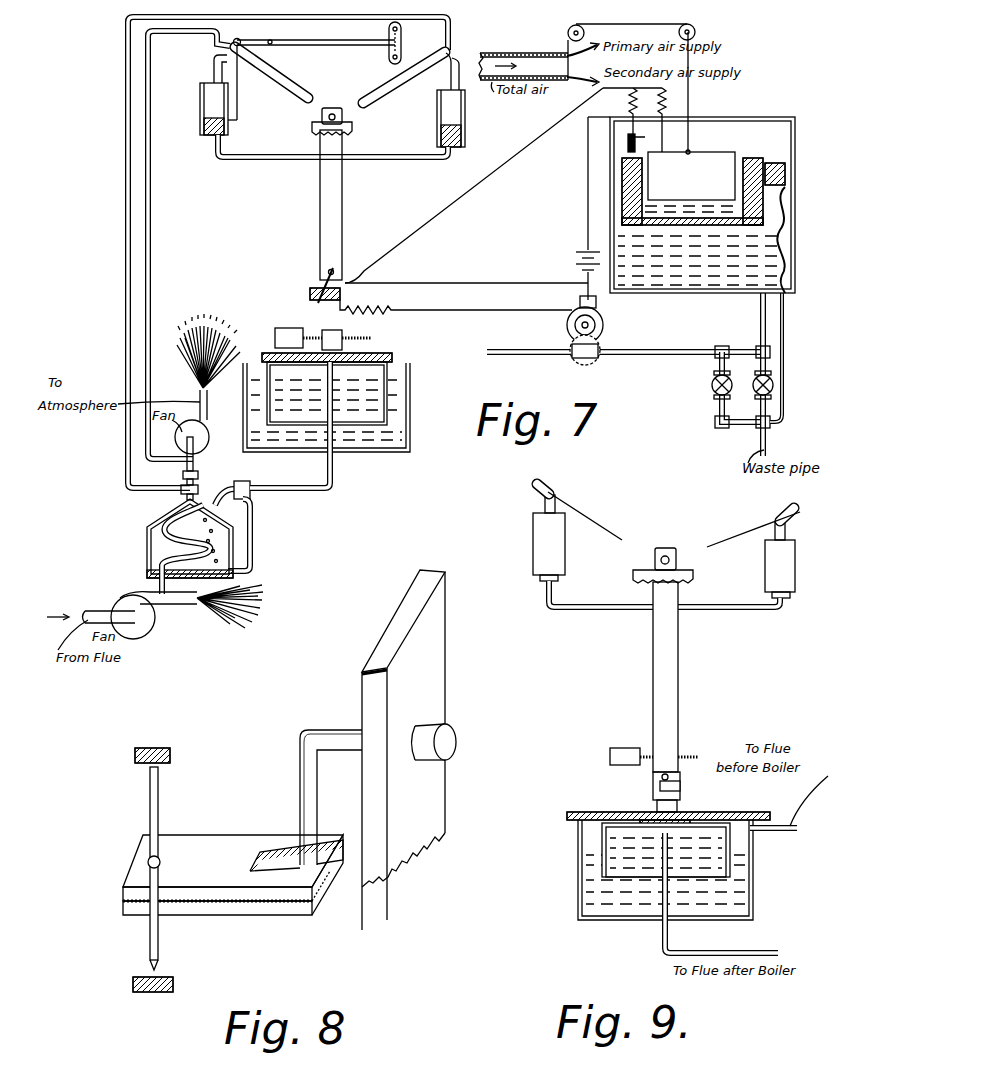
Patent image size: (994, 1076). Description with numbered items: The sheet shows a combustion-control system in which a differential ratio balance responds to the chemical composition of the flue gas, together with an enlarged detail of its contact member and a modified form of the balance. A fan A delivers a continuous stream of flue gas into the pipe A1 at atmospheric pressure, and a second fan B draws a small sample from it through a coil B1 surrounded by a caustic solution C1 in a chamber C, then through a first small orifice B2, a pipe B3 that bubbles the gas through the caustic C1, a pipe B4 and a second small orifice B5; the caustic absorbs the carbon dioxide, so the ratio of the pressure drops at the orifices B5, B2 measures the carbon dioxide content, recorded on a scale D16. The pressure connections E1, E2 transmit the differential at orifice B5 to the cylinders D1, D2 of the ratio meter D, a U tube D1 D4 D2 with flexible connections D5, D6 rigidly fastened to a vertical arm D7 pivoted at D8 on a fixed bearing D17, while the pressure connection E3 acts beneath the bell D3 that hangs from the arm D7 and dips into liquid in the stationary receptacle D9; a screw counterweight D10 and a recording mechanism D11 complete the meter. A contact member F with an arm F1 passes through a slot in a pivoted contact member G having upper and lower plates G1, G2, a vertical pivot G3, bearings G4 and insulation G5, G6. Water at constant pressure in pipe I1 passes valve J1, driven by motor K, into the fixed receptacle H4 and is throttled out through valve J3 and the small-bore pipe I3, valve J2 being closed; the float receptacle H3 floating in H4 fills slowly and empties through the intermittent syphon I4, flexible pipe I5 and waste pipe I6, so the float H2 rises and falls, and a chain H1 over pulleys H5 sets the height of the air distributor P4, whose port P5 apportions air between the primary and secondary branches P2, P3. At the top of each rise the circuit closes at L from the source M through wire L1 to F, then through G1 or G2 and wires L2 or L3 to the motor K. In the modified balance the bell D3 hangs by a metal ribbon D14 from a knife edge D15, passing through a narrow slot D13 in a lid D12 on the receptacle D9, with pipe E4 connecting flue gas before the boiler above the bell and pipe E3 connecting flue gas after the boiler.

In FIG. 7, the pressure connection E1 is at (126, 301).
In FIG. 7, the pressure connection E2 is at (150, 301).
In FIG. 8, the pressure connection E2 is at (420, 727).
In FIG. 7, the ratio meter D is at (290, 191).
In FIG. 7, the cylinder D1 is at (200, 108).
In FIG. 9, the cylinder D1 is at (566, 551).
In FIG. 7, the cylinder D2 is at (466, 104).
In FIG. 9, the cylinder D2 is at (796, 560).
In FIG. 7, the bell D3 is at (380, 357).
In FIG. 9, the bell D3 is at (731, 839).
In FIG. 7, the U tube connection D4 is at (376, 160).
In FIG. 9, the U tube connection D4 is at (710, 609).
In FIG. 7, the flexible connection D5 is at (274, 68).
In FIG. 9, the flexible connection D5 is at (598, 518).
In FIG. 7, the flexible connection D6 is at (386, 98).
In FIG. 9, the flexible connection D6 is at (726, 540).
In FIG. 7, the vertical arm D7 is at (343, 212).
In FIG. 9, the vertical arm D7 is at (679, 668).
In FIG. 7, the pivot D8 is at (343, 117).
In FIG. 9, the pivot D8 is at (668, 556).
In FIG. 7, the stationary receptacle D9 is at (411, 380).
In FIG. 9, the stationary receptacle D9 is at (752, 878).
In FIG. 7, the screw counterweight D10 is at (275, 336).
In FIG. 9, the screw counterweight D10 is at (610, 753).
In FIG. 7, the recording or indicating mechanism D11 is at (312, 45).
In FIG. 9, the lid D12 is at (600, 812).
In FIG. 9, the narrow slot D13 is at (686, 812).
In FIG. 7, the metal ribbon D14 is at (332, 340).
In FIG. 9, the metal ribbon D14 is at (657, 805).
In FIG. 9, the knife edge D15 is at (681, 780).
In FIG. 7, the scale D16 is at (401, 42).
In FIG. 7, the fixed bearing D17 is at (350, 135).
In FIG. 9, the fixed bearing D17 is at (694, 577).
In FIG. 7, the pressure connection E3 is at (334, 463).
In FIG. 9, the pressure connection E3 is at (668, 940).
In FIG. 9, the pressure pipe E4 is at (798, 828).
In FIG. 7, the electric contact member F is at (335, 268).
In FIG. 8, the electric contact member F is at (450, 742).
In FIG. 7, the arm F1 is at (322, 288).
In FIG. 7, the pivoted contact member G is at (341, 295).
In FIG. 8, the pivoted contact member G is at (193, 944).
In FIG. 7, the upper horizontal metal plate G1 is at (310, 290).
In FIG. 8, the upper horizontal metal plate G1 is at (123, 888).
In FIG. 7, the lower horizontal metal plate G2 is at (312, 299).
In FIG. 8, the lower horizontal metal plate G2 is at (123, 905).
In FIG. 8, the vertical pivot G3 is at (158, 790).
In FIG. 8, the bearings G4 is at (171, 754).
In FIG. 7, the insulation G5 is at (310, 295).
In FIG. 8, the insulation G5 is at (220, 905).
In FIG. 8, the insulation G6 is at (147, 862).
In FIG. 7, the electric contact L is at (636, 138).
In FIG. 7, the conducting wire L1 is at (505, 185).
In FIG. 7, the conducting wire L2 is at (448, 283).
In FIG. 7, the conducting wire L3 is at (448, 309).
In FIG. 7, the source of current M is at (578, 262).
In FIG. 7, the motor K is at (605, 322).
In FIG. 7, the valve J1 is at (594, 358).
In FIG. 7, the valve J2 is at (773, 385).
In FIG. 7, the valve J3 is at (714, 388).
In FIG. 7, the water pipe I1 is at (508, 351).
In FIG. 7, the discharge pipe I3 is at (716, 410).
In FIG. 7, the intermittent syphon I4 is at (790, 178).
In FIG. 7, the flexible pipe I5 is at (792, 230).
In FIG. 7, the waste pipe I6 is at (769, 447).
In FIG. 7, the chain or wire H1 is at (690, 99).
In FIG. 7, the float H2 is at (692, 182).
In FIG. 7, the float receptacle H3 is at (749, 160).
In FIG. 7, the fixed receptacle H4 is at (796, 146).
In FIG. 7, the pulleys H5 is at (696, 33).
In FIG. 7, the distributing branch P2 is at (486, 52).
In FIG. 7, the distributing branch P3 is at (588, 25).
In FIG. 7, the air distributor P4 is at (566, 54).
In FIG. 7, the port P5 is at (566, 72).
In FIG. 7, the second fan B is at (207, 440).
In FIG. 7, the coil B1 is at (167, 537).
In FIG. 7, the first small orifice B2 is at (240, 481).
In FIG. 7, the pipe B3 is at (253, 533).
In FIG. 7, the pipe B4 is at (199, 490).
In FIG. 7, the second small orifice B5 is at (199, 474).
In FIG. 7, the chamber C is at (160, 518).
In FIG. 7, the caustic solution C1 is at (165, 557).
In FIG. 7, the fan A is at (150, 616).
In FIG. 7, the pipe A1 is at (170, 607).